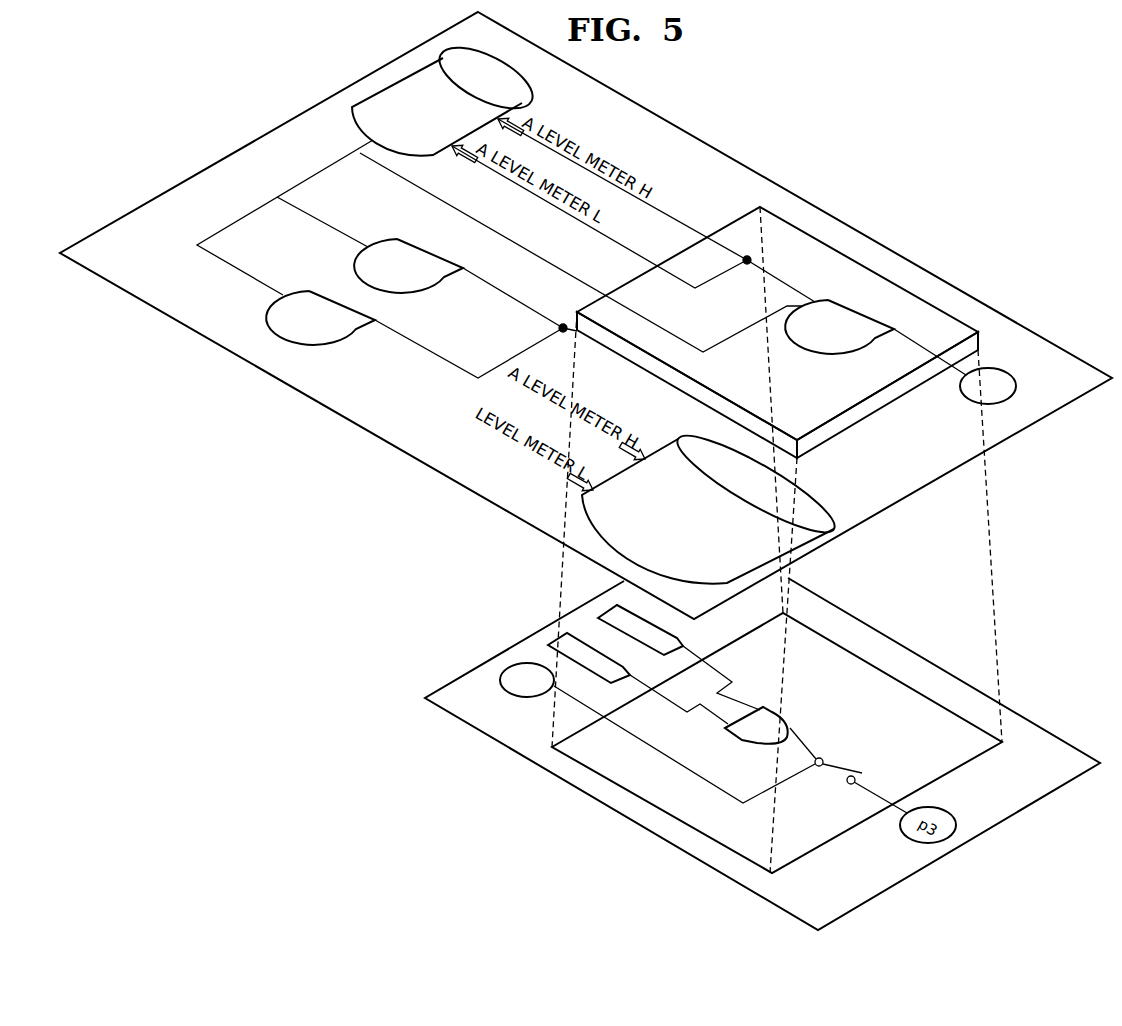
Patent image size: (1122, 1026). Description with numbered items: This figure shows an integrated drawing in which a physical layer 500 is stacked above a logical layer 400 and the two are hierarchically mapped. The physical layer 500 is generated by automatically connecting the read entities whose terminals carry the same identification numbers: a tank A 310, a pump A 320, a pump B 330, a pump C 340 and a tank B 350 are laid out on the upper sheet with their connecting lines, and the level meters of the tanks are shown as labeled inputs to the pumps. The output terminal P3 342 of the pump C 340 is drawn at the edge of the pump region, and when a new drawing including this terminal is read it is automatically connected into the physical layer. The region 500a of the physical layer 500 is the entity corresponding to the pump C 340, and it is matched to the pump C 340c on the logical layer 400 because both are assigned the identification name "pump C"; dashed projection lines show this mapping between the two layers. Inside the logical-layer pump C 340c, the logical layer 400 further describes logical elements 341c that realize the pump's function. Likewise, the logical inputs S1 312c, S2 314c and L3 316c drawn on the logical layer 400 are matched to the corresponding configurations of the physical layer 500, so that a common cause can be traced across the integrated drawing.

The tank A 310 is at (514, 66).
The pump A 320 is at (438, 248).
The pump B 330 is at (353, 298).
The pump C 340 is at (875, 312).
The P3 342 is at (1017, 373).
The tank B 350 is at (797, 477).
The physical layer 500 is at (797, 195).
The corresponding same entity in the physical layer 500a is at (875, 273).
The S1 312c is at (652, 623).
The S2 314c is at (605, 652).
The L3 316c is at (553, 683).
The pump C in the logical layer 340c is at (903, 683).
The logical elements 341c is at (783, 717).
The logical layer 400 is at (1037, 727).